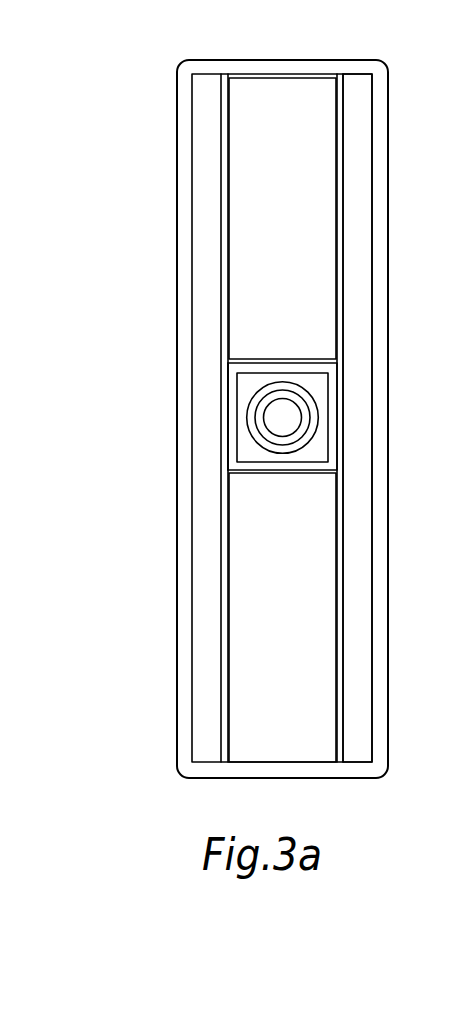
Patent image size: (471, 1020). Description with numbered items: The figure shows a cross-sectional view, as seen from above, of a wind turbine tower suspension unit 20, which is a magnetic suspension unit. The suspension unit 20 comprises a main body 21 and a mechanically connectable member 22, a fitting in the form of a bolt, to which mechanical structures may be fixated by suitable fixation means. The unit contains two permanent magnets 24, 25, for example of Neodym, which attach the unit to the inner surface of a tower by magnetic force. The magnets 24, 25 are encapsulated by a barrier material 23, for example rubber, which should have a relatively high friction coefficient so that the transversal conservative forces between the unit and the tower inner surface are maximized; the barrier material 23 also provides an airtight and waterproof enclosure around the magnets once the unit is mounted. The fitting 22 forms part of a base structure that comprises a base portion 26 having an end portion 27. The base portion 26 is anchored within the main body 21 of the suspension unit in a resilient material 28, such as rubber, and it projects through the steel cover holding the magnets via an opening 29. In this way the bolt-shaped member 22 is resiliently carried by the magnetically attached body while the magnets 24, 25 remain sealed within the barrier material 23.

The wind turbine tower suspension unit 20 is at (428, 132).
The main body 21 is at (180, 70).
The mechanically connectable member 22 is at (279, 417).
The barrier material 23 is at (355, 233).
The magnet 24 is at (262, 250).
The magnet 25 is at (290, 621).
The base portion 26 is at (275, 392).
The end portion 27 is at (248, 452).
The resilient material 28 is at (232, 423).
The opening 29 is at (238, 470).